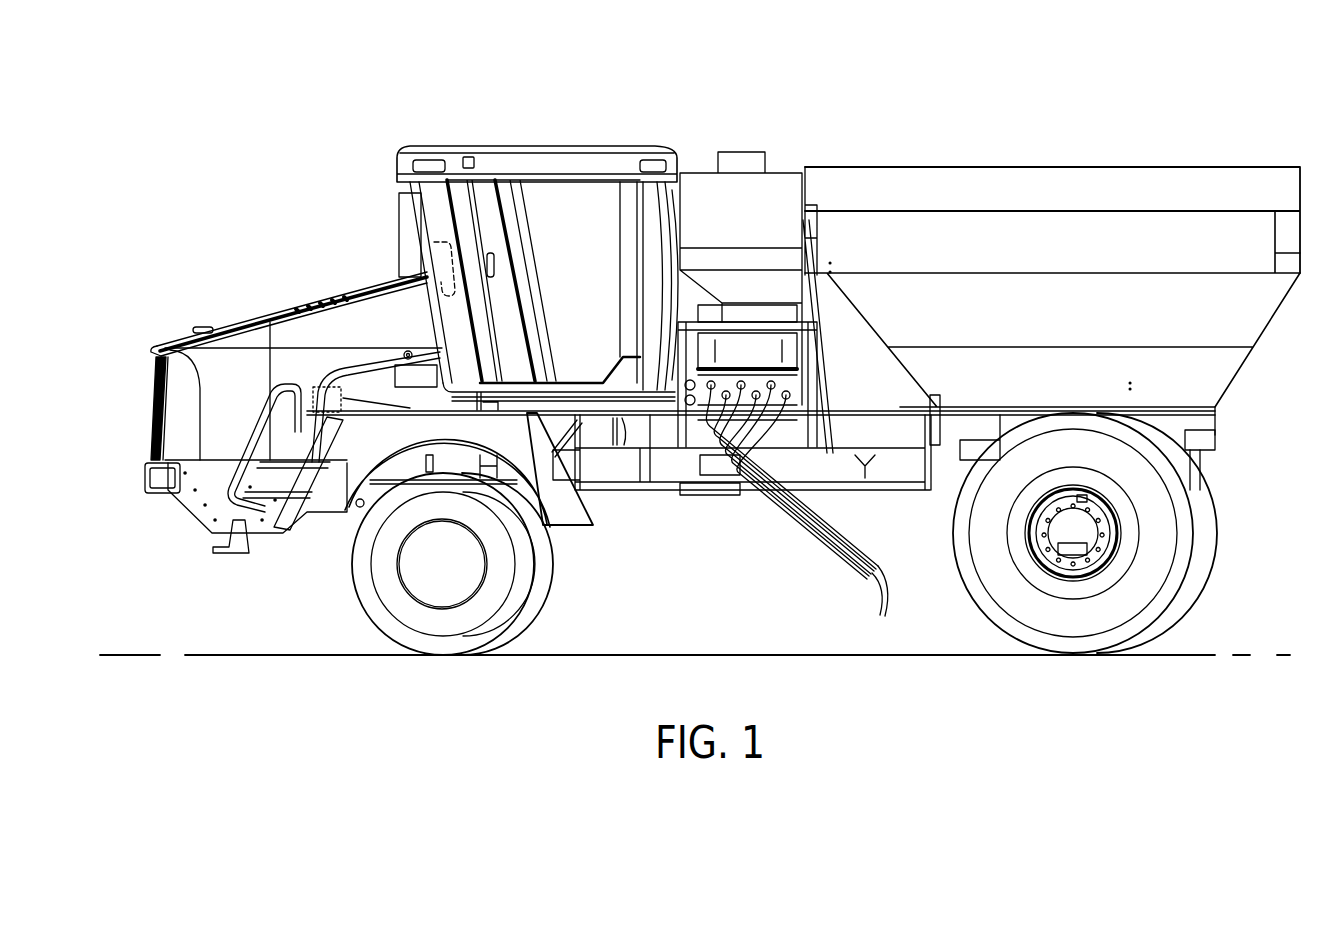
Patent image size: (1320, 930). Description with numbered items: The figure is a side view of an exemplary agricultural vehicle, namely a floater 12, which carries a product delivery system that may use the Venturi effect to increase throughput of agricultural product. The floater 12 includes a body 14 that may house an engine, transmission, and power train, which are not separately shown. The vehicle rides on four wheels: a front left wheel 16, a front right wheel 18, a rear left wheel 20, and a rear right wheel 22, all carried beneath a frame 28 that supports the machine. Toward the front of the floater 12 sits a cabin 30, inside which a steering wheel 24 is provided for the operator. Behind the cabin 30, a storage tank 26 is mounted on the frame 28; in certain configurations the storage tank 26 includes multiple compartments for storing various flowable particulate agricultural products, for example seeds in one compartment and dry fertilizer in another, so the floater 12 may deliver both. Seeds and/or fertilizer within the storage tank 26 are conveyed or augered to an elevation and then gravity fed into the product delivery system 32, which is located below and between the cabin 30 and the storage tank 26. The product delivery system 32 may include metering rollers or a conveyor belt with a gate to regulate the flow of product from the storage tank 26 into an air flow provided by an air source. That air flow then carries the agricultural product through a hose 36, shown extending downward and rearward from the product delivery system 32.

The floater 12 is at (631, 82).
The body 14 is at (907, 154).
The front left wheel 16 is at (352, 577).
The front right wheel 18 is at (545, 597).
The rear left wheel 20 is at (972, 605).
The rear right wheel 22 is at (1198, 590).
The steering wheel 24 is at (437, 256).
The storage tank 26 is at (1013, 167).
The frame 28 is at (878, 486).
The cabin 30 is at (443, 129).
The product delivery system 32 is at (756, 511).
The hose 36 is at (852, 552).